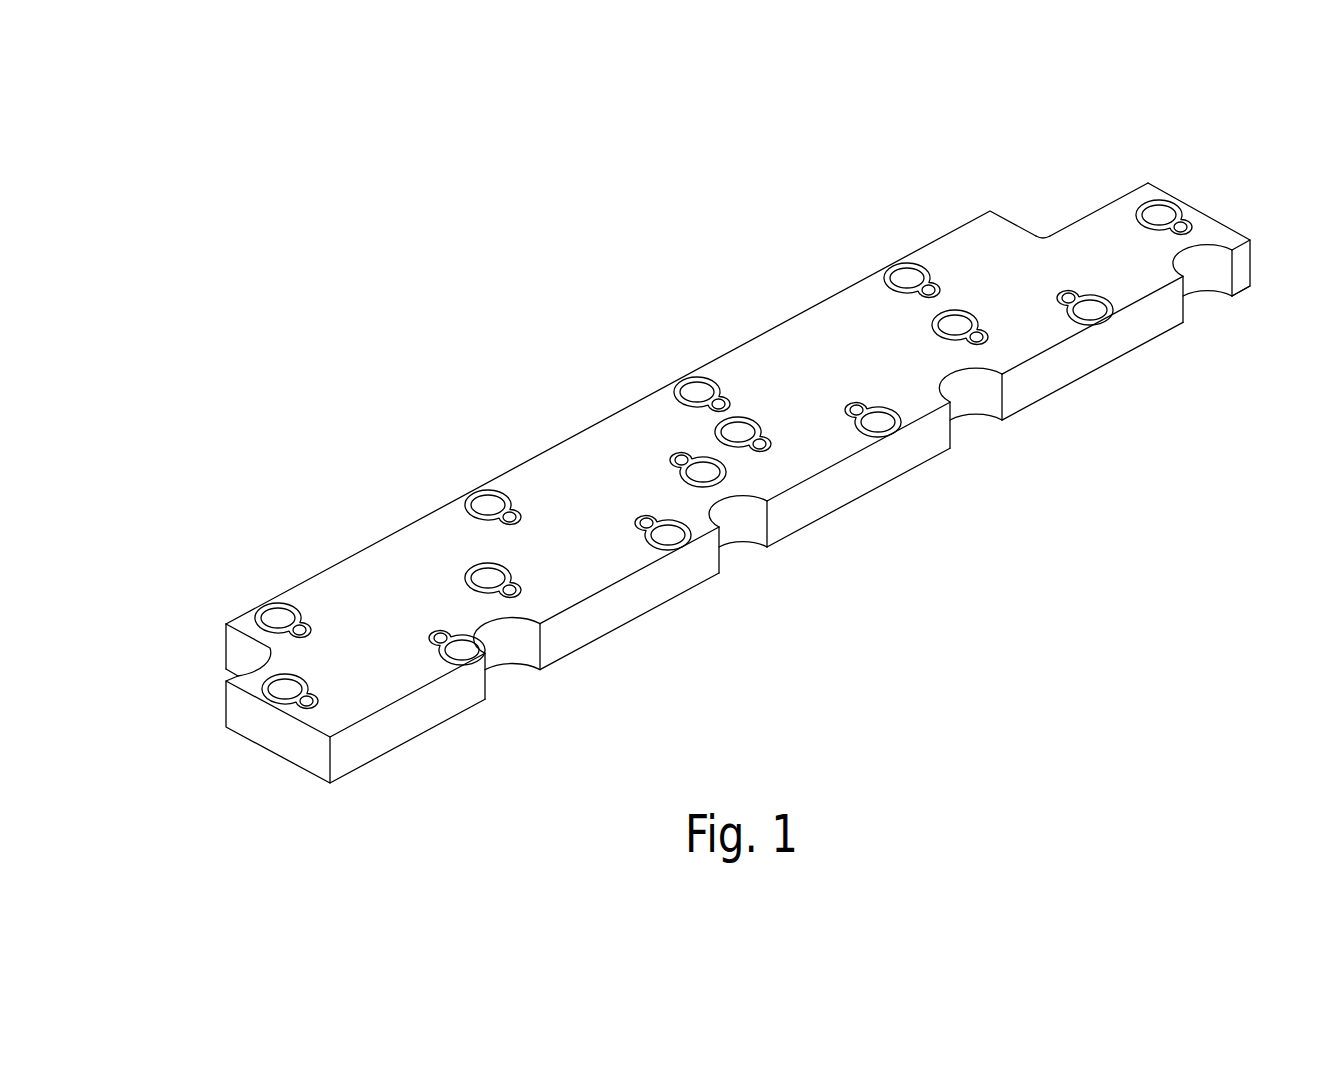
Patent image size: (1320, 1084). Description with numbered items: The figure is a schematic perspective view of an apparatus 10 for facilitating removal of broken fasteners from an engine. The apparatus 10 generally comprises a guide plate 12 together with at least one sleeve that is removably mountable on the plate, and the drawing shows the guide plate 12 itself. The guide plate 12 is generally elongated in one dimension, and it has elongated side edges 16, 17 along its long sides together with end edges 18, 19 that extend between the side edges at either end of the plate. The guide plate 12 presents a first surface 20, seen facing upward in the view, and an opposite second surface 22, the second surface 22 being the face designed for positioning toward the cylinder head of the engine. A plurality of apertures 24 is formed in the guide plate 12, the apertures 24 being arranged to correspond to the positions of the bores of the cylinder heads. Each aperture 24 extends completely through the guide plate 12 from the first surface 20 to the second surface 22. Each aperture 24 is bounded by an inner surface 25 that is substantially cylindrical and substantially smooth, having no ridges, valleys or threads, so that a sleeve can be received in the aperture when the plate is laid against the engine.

The apparatus 10 is at (944, 185).
The guide plate 12 is at (627, 597).
The side edge 16 is at (565, 438).
The side edge 17 is at (707, 580).
The end edge 18 is at (243, 773).
The end edge 19 is at (1193, 218).
The first surface 20 is at (687, 494).
The second surface 22 is at (790, 534).
The aperture 24 is at (277, 620).
The inner surface 25 is at (469, 463).